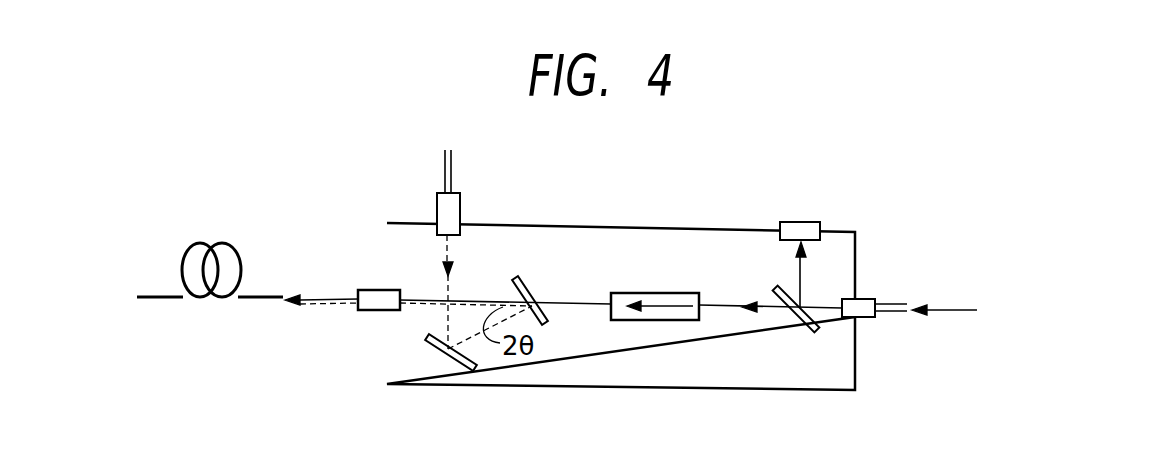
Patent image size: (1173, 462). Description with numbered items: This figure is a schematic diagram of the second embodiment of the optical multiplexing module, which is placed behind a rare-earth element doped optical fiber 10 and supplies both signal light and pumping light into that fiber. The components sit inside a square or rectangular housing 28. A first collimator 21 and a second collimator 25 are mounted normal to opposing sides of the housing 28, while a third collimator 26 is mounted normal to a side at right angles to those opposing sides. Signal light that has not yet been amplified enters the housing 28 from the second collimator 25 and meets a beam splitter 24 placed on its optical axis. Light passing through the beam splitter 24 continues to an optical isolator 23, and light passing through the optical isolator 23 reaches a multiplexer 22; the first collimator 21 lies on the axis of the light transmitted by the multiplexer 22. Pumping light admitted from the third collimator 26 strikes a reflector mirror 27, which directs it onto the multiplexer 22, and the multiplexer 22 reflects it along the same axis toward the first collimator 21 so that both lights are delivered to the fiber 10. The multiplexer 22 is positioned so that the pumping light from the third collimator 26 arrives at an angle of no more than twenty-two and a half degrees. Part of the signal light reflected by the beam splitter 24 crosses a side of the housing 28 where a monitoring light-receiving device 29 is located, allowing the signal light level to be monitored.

The rare-earth element doped optical fiber 10 is at (235, 252).
The first collimator 21 is at (370, 312).
The multiplexer 22 is at (524, 281).
The optical isolator 23 is at (633, 322).
The beam splitter 24 is at (797, 331).
The second collimator 25 is at (862, 320).
The third collimator 26 is at (461, 208).
The reflector mirror 27 is at (455, 370).
The housing 28 is at (857, 255).
The monitoring light-receiving device 29 is at (786, 222).